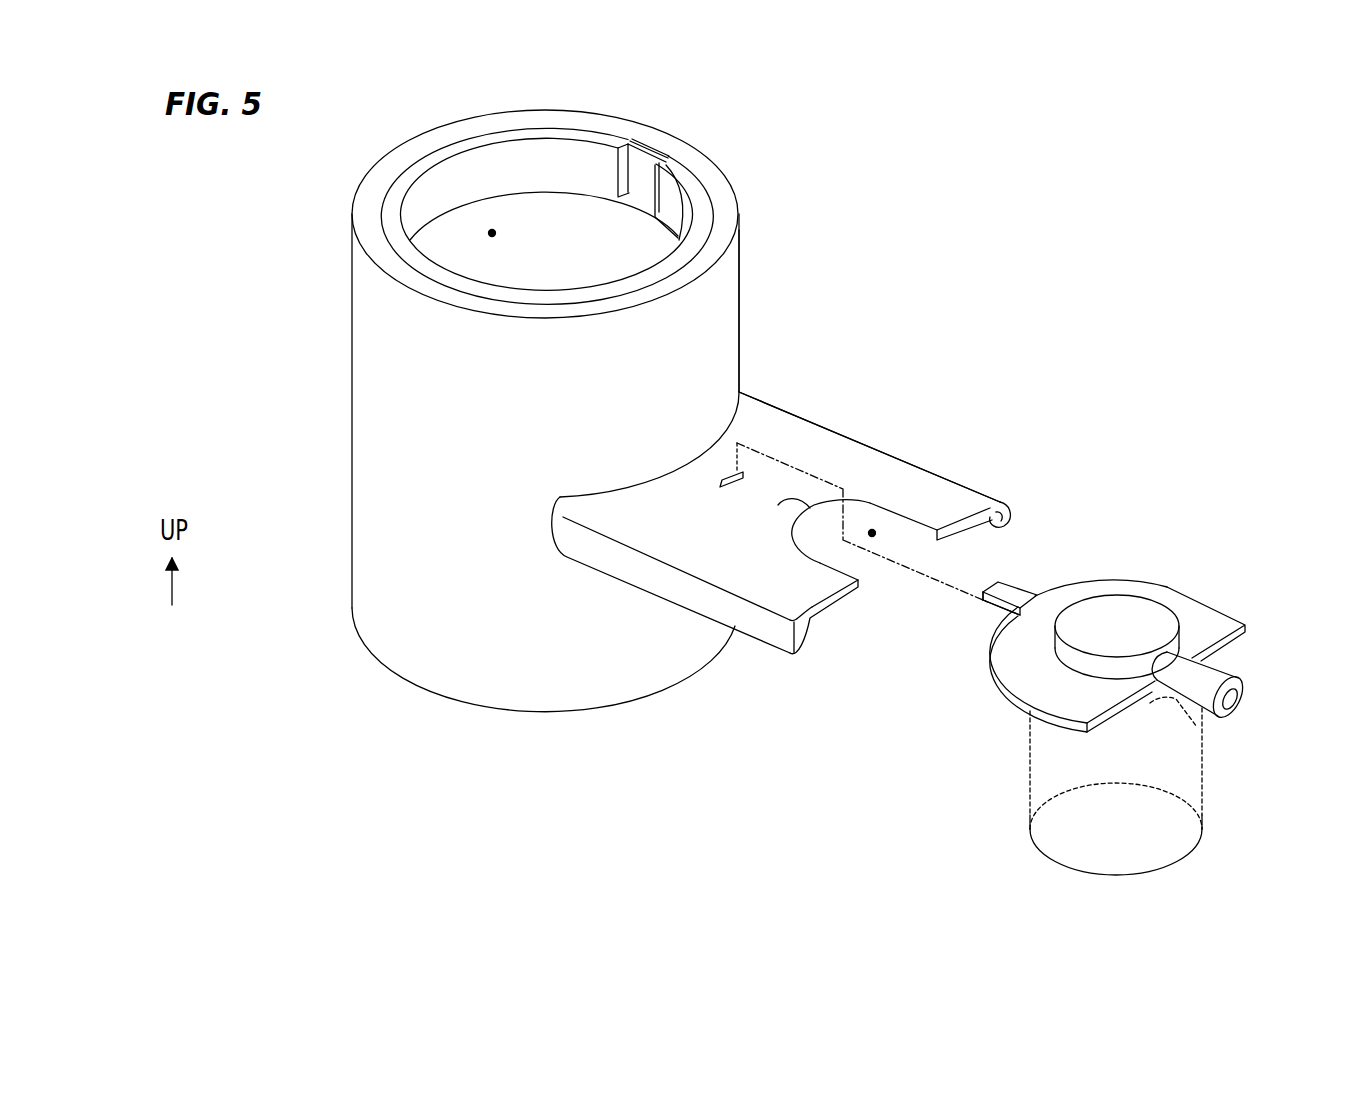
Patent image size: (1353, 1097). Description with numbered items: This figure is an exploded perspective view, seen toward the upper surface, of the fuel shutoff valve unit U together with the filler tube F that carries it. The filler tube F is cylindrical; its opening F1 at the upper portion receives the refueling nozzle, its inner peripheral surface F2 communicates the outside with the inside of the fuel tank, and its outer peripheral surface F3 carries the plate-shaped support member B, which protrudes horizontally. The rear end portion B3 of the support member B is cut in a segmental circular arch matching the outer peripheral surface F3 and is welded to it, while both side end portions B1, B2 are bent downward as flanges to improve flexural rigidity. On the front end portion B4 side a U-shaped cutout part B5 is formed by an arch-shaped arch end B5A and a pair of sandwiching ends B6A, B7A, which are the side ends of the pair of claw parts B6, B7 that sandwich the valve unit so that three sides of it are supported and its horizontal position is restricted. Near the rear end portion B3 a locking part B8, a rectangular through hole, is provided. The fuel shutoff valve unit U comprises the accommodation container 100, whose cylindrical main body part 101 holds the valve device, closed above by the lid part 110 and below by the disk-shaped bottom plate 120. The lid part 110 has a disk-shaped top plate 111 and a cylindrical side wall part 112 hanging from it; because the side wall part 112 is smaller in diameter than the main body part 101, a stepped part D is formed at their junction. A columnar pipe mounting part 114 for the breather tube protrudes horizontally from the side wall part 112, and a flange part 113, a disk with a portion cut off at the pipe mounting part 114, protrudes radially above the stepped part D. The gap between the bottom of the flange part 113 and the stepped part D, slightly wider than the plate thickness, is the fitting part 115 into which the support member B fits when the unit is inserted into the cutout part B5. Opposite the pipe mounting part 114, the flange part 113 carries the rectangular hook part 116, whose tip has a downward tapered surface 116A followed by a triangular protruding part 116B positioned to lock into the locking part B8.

The filler tube F is at (754, 179).
The opening F1 is at (492, 230).
The inner peripheral surface F2 is at (435, 243).
The outer peripheral surface F3 is at (741, 268).
The support member B is at (818, 388).
The side end portion B1 is at (670, 585).
The side end portion B2 is at (1006, 530).
The rear end portion B3 is at (723, 410).
The front end portion B4 is at (953, 525).
The cutout part B5 is at (872, 528).
The arch end B5A is at (795, 503).
The claw part B6 is at (812, 602).
The sandwiching end B6A is at (860, 583).
The claw part B7 is at (955, 495).
The sandwiching end B7A is at (890, 510).
The locking part B8 is at (728, 476).
The accommodation container 100 is at (1222, 806).
The main body part 101 is at (1185, 840).
The lid part 110 is at (1250, 590).
The top plate 111 is at (1130, 608).
The side wall part 112 is at (1062, 652).
The flange part 113 is at (1196, 612).
The pipe mounting part 114 is at (1245, 695).
The fitting part 115 is at (1137, 702).
The hook part 116 is at (1015, 596).
The tapered surface 116A is at (993, 602).
The protruding part 116B is at (1002, 598).
The bottom plate 120 is at (1142, 842).
The stepped part D is at (1168, 700).
The fuel shutoff valve unit U is at (1052, 865).